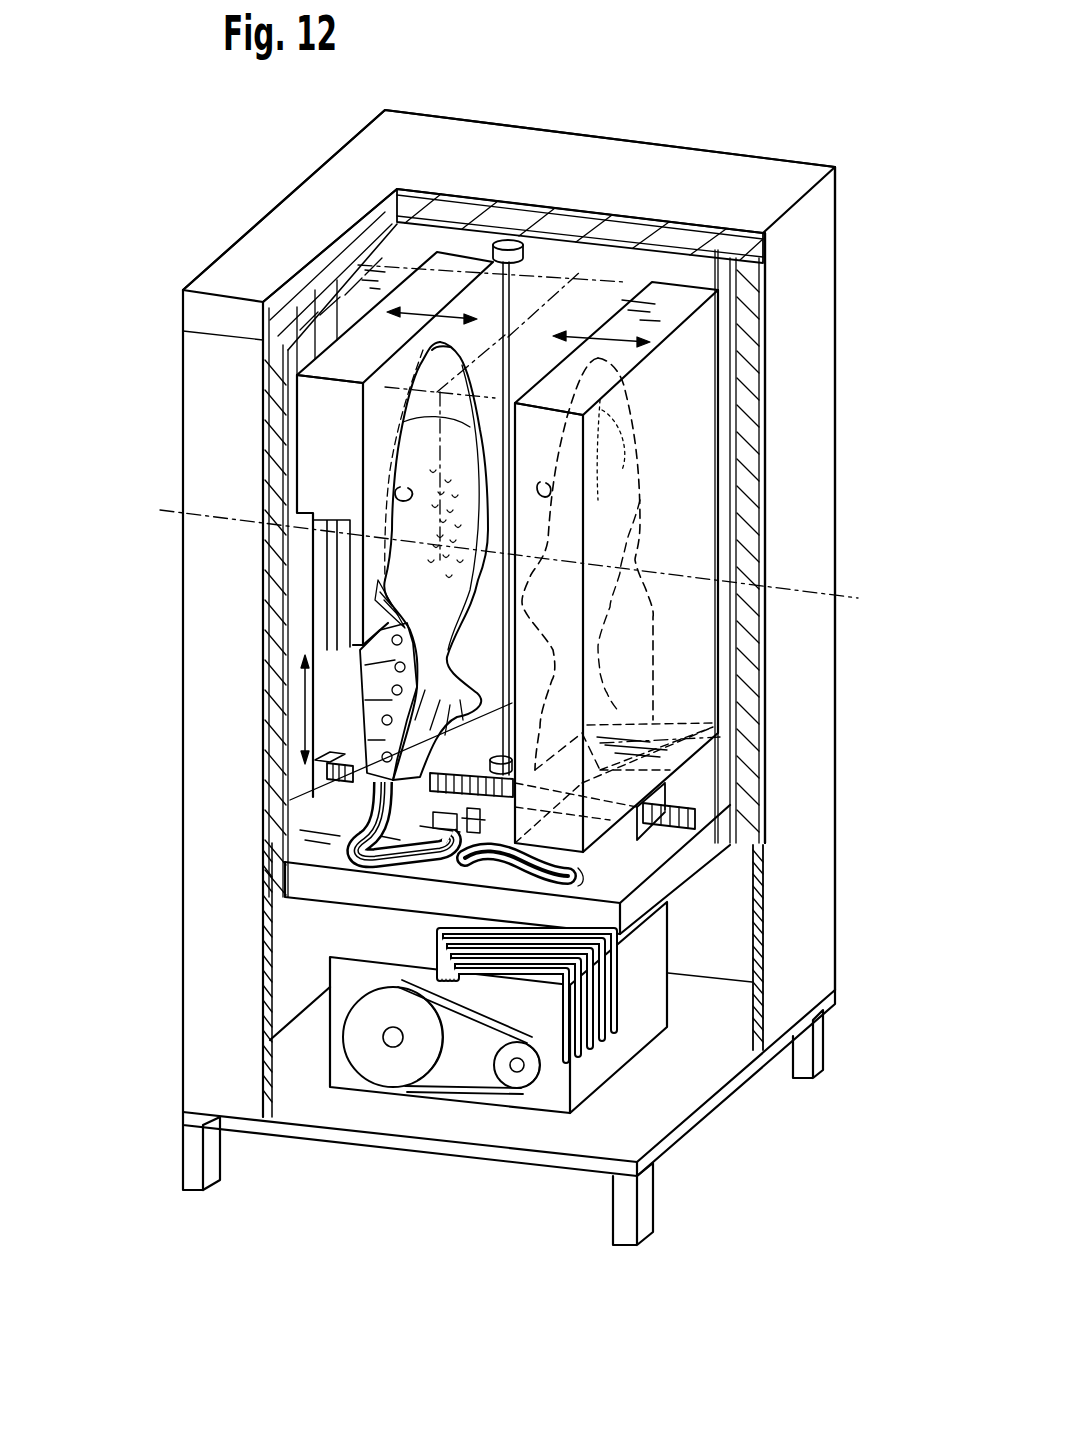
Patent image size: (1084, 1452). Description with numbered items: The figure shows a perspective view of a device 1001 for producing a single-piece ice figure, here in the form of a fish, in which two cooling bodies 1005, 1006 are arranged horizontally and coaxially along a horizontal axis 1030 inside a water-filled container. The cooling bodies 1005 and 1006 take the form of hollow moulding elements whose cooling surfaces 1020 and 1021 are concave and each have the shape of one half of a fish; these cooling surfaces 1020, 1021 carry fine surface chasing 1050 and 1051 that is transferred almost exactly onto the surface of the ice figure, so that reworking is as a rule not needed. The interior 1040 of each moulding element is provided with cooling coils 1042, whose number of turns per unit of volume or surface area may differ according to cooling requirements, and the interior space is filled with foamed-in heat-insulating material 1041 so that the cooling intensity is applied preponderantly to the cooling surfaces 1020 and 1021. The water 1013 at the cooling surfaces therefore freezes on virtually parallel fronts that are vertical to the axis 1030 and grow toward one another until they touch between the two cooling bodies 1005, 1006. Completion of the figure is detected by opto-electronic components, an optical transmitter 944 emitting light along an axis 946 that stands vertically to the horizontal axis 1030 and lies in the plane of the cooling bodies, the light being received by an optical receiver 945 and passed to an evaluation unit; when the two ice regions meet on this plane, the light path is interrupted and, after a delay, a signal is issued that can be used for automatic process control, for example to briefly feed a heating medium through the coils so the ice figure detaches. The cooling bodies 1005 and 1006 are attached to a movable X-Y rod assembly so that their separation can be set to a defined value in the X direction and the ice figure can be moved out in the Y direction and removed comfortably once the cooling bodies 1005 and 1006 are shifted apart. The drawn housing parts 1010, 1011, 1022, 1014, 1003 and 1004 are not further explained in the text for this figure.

The device 1001 is at (654, 120).
The optical transmitter 944 is at (510, 238).
The axis 946 is at (500, 258).
The water 1013 is at (357, 236).
The top wall 1010 is at (818, 198).
The roof insulation 1011 is at (737, 253).
The cooling body 1006 is at (697, 374).
The cooling body 1005 is at (317, 425).
The cooling surface 1020 is at (398, 490).
The cooling surface 1021 is at (548, 492).
The surface chasing 1050 is at (430, 545).
The surface chasing 1051 is at (657, 617).
The axis 1030 is at (858, 598).
The Y direction Y is at (327, 571).
The interior 1040 is at (345, 636).
The heat-insulating material 1041 is at (367, 687).
The optical receiver 945 is at (524, 768).
The right wall 1022 is at (837, 737).
The cooling coils 1042 is at (313, 800).
The X direction X is at (696, 816).
The shelf 1014 is at (457, 827).
The base frame 1003 is at (180, 1020).
The motor unit 1004 is at (484, 1097).